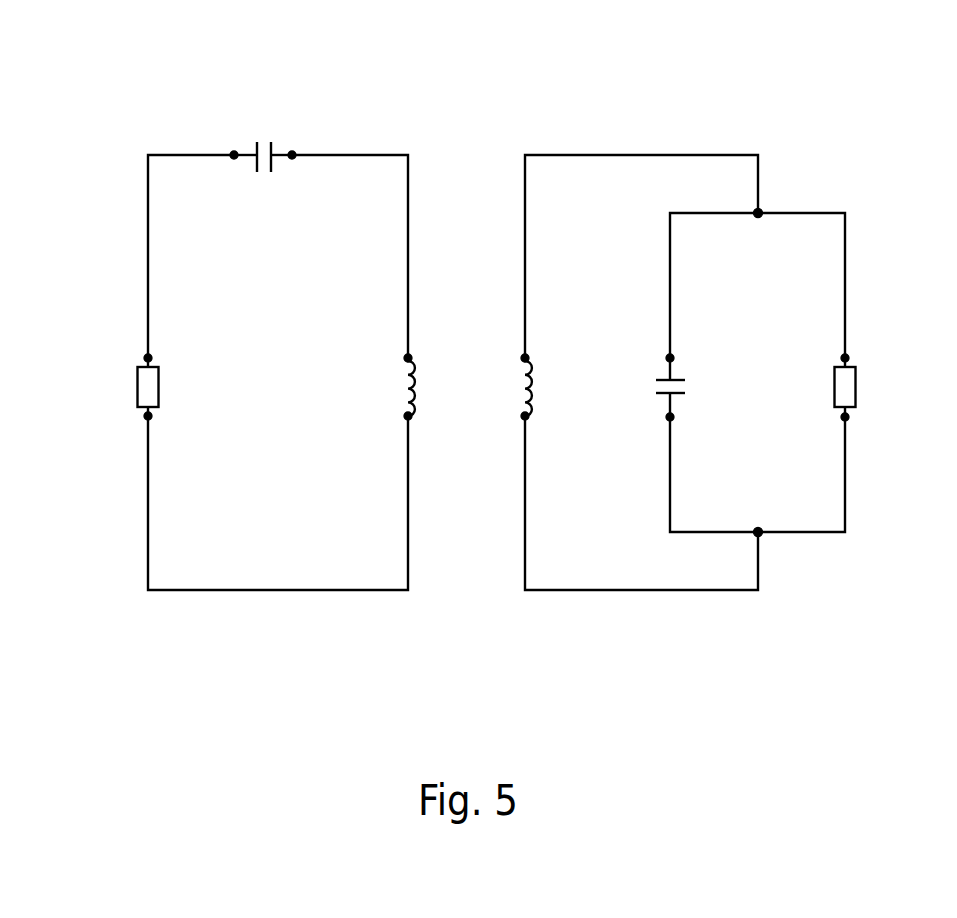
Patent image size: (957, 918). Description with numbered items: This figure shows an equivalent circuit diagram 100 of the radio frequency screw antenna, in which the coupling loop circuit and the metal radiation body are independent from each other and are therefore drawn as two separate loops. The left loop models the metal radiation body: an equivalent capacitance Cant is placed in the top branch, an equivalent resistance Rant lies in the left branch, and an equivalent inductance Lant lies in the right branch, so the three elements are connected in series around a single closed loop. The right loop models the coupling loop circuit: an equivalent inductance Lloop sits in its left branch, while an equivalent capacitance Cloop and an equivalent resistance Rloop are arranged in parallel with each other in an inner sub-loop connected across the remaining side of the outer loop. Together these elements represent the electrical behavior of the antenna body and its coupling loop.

The equivalent circuit of antenna and loop 100 is at (107, 75).
The equivalent capacitance of the metal radiation body Cant is at (263, 136).
The equivalent resistance of the metal radiation body Rant is at (188, 387).
The equivalent inductance of the metal radiation body Lant is at (444, 387).
The equivalent inductance of the coupling loop circuit Lloop is at (571, 387).
The equivalent capacitance of the coupling loop circuit Cloop is at (716, 371).
The equivalent resistance of the coupling loop circuit Rloop is at (895, 387).